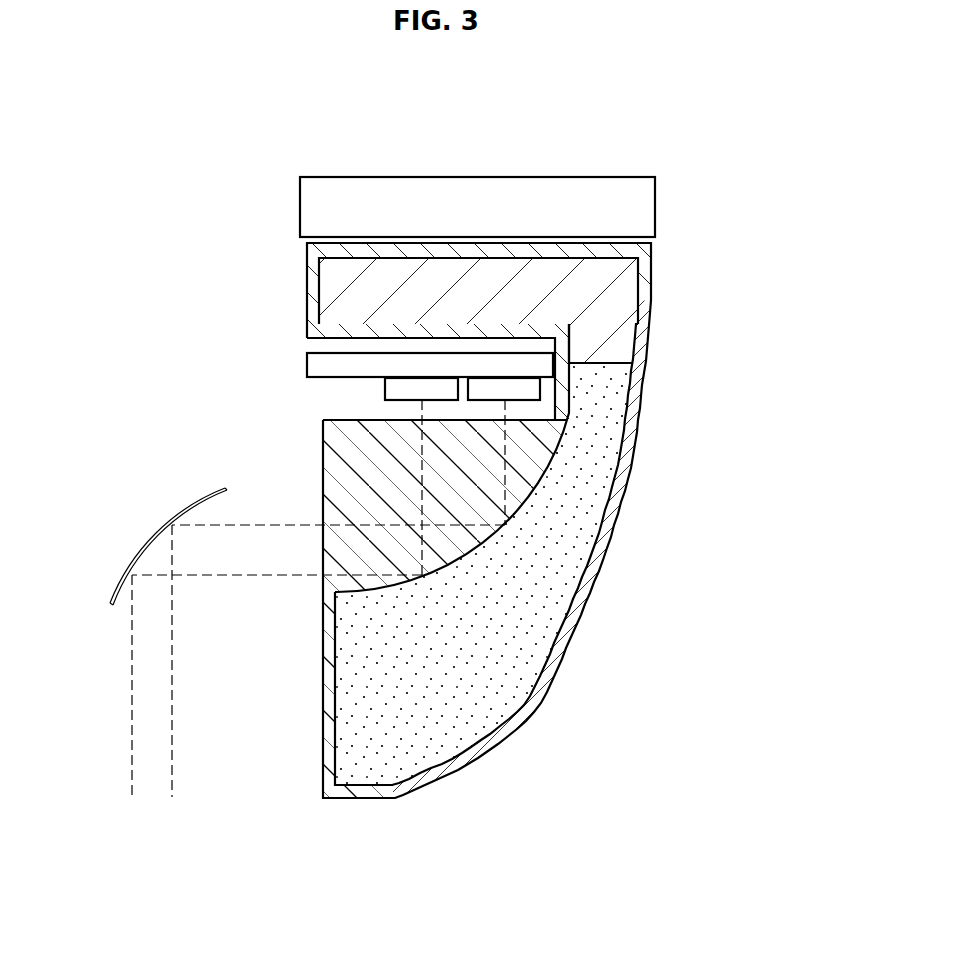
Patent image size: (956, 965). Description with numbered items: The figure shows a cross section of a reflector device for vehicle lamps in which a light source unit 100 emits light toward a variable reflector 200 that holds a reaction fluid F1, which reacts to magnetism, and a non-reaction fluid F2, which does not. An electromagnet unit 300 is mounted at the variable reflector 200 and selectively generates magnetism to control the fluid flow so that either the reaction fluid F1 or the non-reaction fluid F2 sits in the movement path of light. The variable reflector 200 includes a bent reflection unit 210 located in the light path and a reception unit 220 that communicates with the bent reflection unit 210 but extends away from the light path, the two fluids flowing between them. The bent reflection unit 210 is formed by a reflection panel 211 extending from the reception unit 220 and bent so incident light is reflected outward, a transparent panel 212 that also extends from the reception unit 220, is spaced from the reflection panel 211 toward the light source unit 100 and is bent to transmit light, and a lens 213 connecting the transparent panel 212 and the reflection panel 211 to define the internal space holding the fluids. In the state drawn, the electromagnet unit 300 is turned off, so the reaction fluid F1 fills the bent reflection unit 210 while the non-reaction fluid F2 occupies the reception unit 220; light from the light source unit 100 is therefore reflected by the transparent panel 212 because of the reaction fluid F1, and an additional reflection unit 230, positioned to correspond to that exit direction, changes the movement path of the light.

The electromagnet unit 300 is at (410, 175).
The variable reflector 200 is at (502, 594).
The reception unit 220 is at (502, 331).
The non-reaction fluid F2 is at (355, 296).
The bent reflection unit 210 is at (464, 622).
The reflection panel 211 is at (521, 588).
The transparent panel 212 is at (463, 543).
The lens 213 is at (322, 698).
The reaction fluid F1 is at (542, 635).
The light source unit 100 is at (376, 379).
The additional reflection unit 230 is at (147, 540).